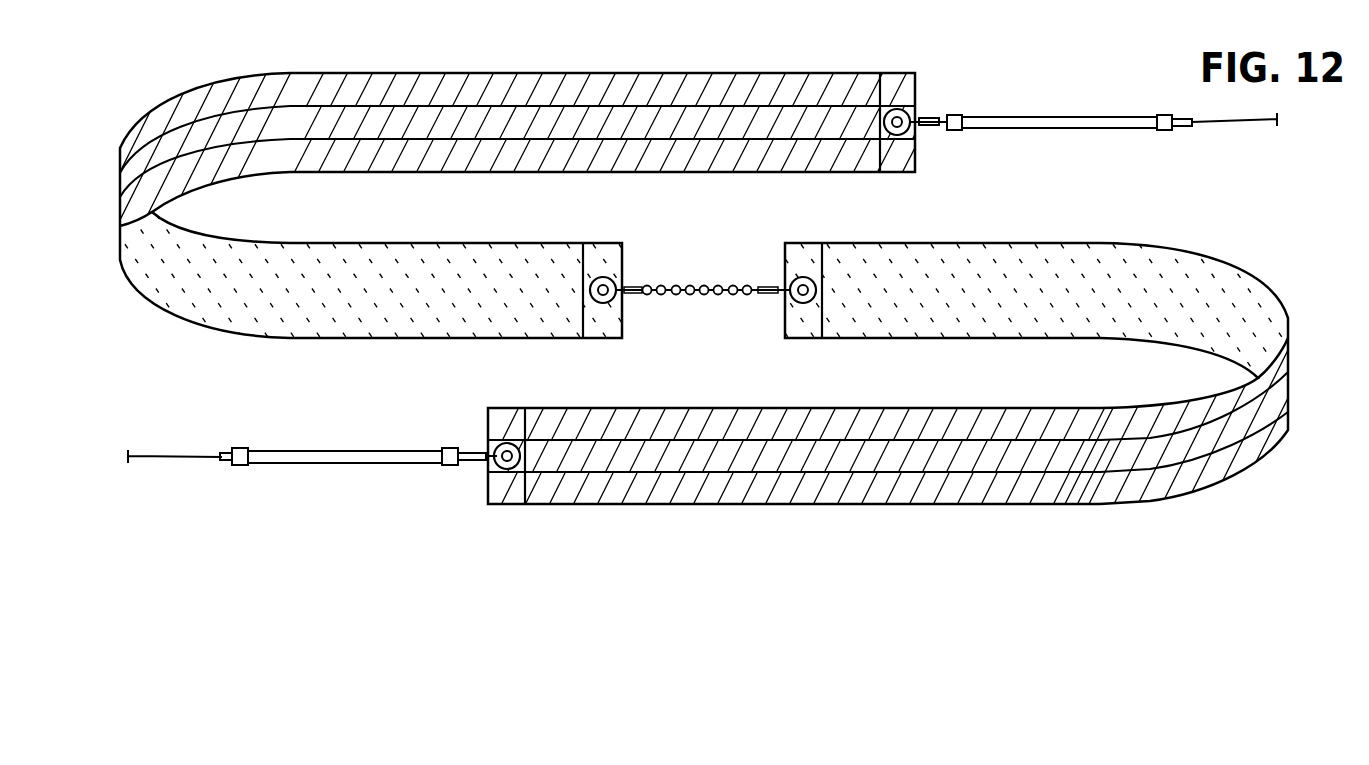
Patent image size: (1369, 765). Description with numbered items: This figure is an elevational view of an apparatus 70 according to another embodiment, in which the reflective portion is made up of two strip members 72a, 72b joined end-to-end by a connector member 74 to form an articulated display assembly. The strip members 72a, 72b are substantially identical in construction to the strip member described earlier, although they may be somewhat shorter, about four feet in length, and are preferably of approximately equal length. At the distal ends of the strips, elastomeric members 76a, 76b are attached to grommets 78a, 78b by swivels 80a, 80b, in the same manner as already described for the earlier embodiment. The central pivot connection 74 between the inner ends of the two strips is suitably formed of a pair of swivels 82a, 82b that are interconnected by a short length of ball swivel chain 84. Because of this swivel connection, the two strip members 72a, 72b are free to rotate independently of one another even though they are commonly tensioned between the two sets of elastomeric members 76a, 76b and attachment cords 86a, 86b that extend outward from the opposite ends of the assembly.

The apparatus 70 is at (1222, 597).
The strip member 72a is at (664, 70).
The strip member 72b is at (866, 513).
The connector member 74 is at (701, 262).
The elastomeric member 76a is at (1037, 113).
The elastomeric member 76b is at (353, 467).
The grommet 78a is at (905, 137).
The grommet 78b is at (490, 473).
The swivel 80a is at (925, 115).
The swivel 80b is at (473, 447).
The swivel 82a is at (632, 275).
The swivel 82b is at (770, 295).
The ball swivel chain 84 is at (697, 300).
The attachment cord 86a is at (1222, 125).
The attachment cord 86b is at (178, 452).